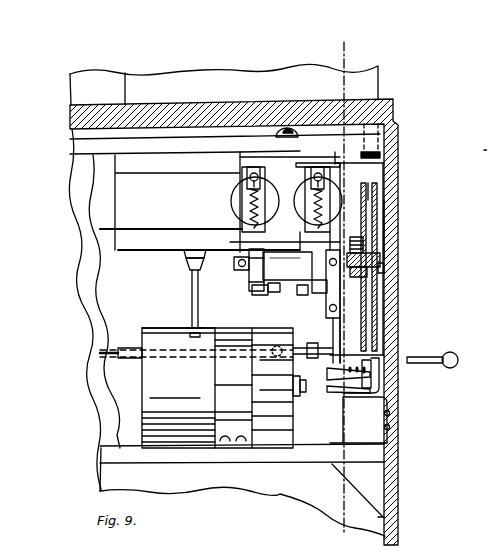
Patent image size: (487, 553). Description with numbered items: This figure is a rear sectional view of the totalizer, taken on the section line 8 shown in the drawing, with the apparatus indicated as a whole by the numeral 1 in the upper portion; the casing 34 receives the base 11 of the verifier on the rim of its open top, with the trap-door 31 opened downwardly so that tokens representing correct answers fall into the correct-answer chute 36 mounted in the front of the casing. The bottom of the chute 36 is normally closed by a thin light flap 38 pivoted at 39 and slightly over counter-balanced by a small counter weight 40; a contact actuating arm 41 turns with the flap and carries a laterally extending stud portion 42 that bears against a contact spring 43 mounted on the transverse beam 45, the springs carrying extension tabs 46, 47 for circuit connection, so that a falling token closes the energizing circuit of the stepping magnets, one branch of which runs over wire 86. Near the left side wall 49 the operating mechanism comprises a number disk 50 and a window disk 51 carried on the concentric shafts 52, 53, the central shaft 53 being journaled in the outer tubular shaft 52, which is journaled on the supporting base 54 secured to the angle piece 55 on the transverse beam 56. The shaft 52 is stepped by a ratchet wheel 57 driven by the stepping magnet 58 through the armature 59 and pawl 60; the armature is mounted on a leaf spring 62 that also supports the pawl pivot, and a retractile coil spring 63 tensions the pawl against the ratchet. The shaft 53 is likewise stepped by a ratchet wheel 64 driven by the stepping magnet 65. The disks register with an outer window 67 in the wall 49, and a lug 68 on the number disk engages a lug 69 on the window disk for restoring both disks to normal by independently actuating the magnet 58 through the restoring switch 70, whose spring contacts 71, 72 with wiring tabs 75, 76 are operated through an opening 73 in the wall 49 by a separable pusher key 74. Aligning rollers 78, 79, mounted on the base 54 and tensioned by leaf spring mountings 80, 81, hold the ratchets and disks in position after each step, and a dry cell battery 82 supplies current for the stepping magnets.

The machine frame top 1 is at (388, 67).
The section line 8- 8 is at (344, 46).
The base 11 is at (80, 105).
The trap-door 31 is at (104, 205).
The casing 34 is at (103, 422).
The correct-answer chute 36 is at (118, 292).
The flap 38 is at (118, 353).
The pivot 39 is at (316, 350).
The counter weight 40 is at (303, 378).
The contact actuating arm 41 is at (160, 328).
The stud portion 42 is at (190, 328).
The contact spring 43 is at (194, 290).
The transverse beam 45 is at (125, 243).
The extension tab 46 is at (192, 266).
The extension tab 47 is at (186, 254).
The left side wall 49 is at (393, 418).
The number disk 50 is at (372, 197).
The window disk 51 is at (382, 182).
The outer tubular shaft 52 is at (361, 267).
The central shaft 53 is at (235, 260).
The supporting base 54 is at (282, 270).
The angle piece 55 is at (246, 157).
The transverse beam 56 is at (163, 157).
The ratchet wheel 57 is at (326, 298).
The stepping magnet 58 is at (300, 210).
The armature 59 is at (300, 185).
The pawl 60 is at (313, 240).
The leaf spring 62 is at (264, 174).
The retractile coil spring 63 is at (335, 196).
The ratchet wheel 64 is at (250, 280).
The stepping magnet 65 is at (236, 208).
The outer window 67 is at (390, 219).
The lug 68 is at (372, 236).
The lug 69 is at (382, 260).
The restoring switch 70 is at (348, 412).
The spring contact 71 is at (376, 380).
The spring contact 72 is at (370, 372).
The opening 73 is at (388, 365).
The pusher plug or key 74 is at (458, 358).
The wiring tab 75 is at (327, 389).
The wiring tab 76 is at (327, 374).
The aligning roller 78 is at (318, 294).
The aligning roller 79 is at (255, 298).
The leaf spring mounting 80 is at (298, 295).
The leaf spring mounting 81 is at (268, 292).
The dry cell battery 82 is at (163, 380).
The wire 86 is at (486, 151).